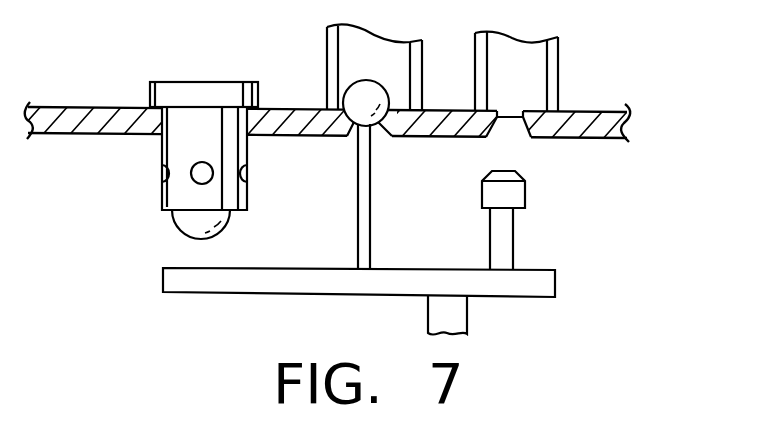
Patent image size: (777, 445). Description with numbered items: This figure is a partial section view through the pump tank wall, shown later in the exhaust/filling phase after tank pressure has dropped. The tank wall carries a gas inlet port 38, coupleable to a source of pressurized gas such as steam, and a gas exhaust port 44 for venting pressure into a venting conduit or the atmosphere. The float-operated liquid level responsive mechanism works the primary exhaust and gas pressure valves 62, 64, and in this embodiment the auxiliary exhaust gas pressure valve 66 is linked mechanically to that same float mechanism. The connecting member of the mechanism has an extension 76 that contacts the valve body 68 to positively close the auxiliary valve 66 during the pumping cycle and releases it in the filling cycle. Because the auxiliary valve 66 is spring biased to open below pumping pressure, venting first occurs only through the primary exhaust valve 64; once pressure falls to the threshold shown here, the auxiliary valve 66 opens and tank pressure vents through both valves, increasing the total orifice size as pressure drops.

The gas inlet port 38 is at (345, 58).
The gas exhaust port 44 is at (533, 71).
The gas pressure valve 62 is at (383, 132).
The primary exhaust valve 64 is at (530, 137).
The auxiliary exhaust gas pressure valve 66 is at (177, 150).
The valve body 68 is at (233, 213).
The extension 76 is at (210, 280).